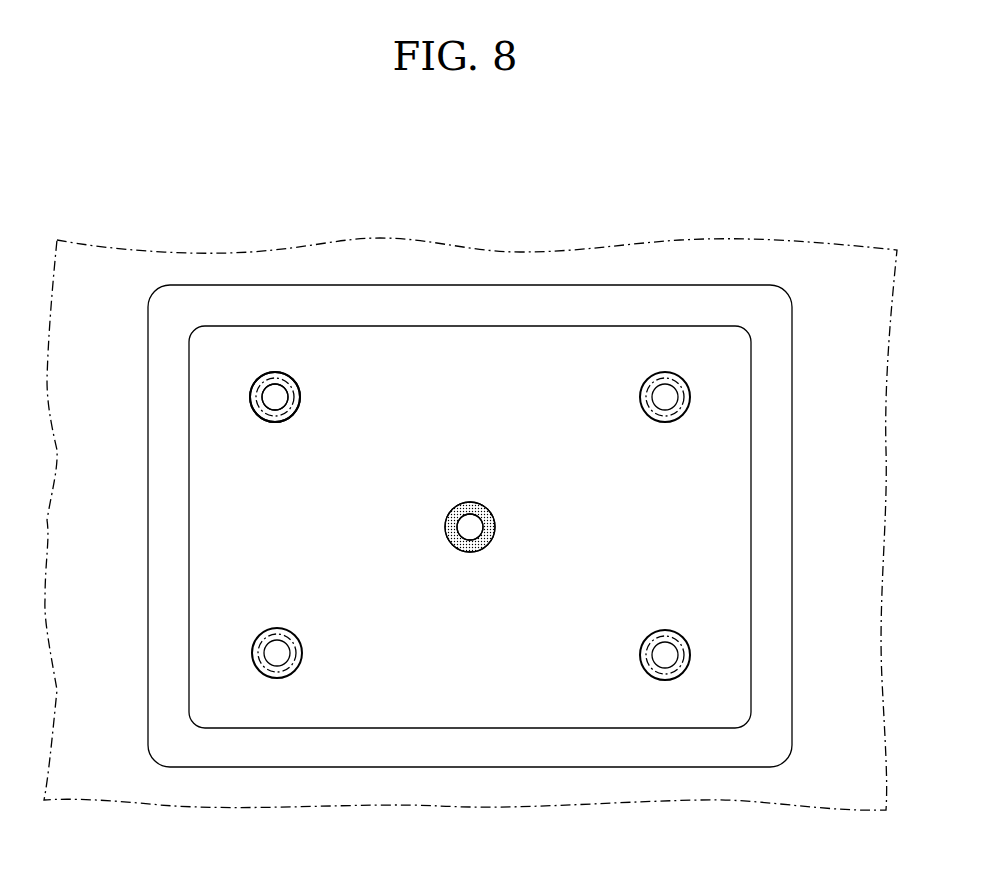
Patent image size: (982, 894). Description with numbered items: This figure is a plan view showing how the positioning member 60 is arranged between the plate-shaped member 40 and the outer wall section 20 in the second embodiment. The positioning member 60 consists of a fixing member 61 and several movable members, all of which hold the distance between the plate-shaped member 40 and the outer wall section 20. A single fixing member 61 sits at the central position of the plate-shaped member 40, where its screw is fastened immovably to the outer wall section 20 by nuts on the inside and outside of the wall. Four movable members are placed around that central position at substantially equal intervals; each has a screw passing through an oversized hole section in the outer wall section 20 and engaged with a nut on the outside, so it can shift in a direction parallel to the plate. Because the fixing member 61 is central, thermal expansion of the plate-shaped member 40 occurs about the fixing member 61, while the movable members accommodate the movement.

The outer wall section 20 is at (230, 250).
The plate-shaped member 40 is at (458, 345).
The positioning member 60 is at (562, 365).
The fixing member 61 is at (483, 498).